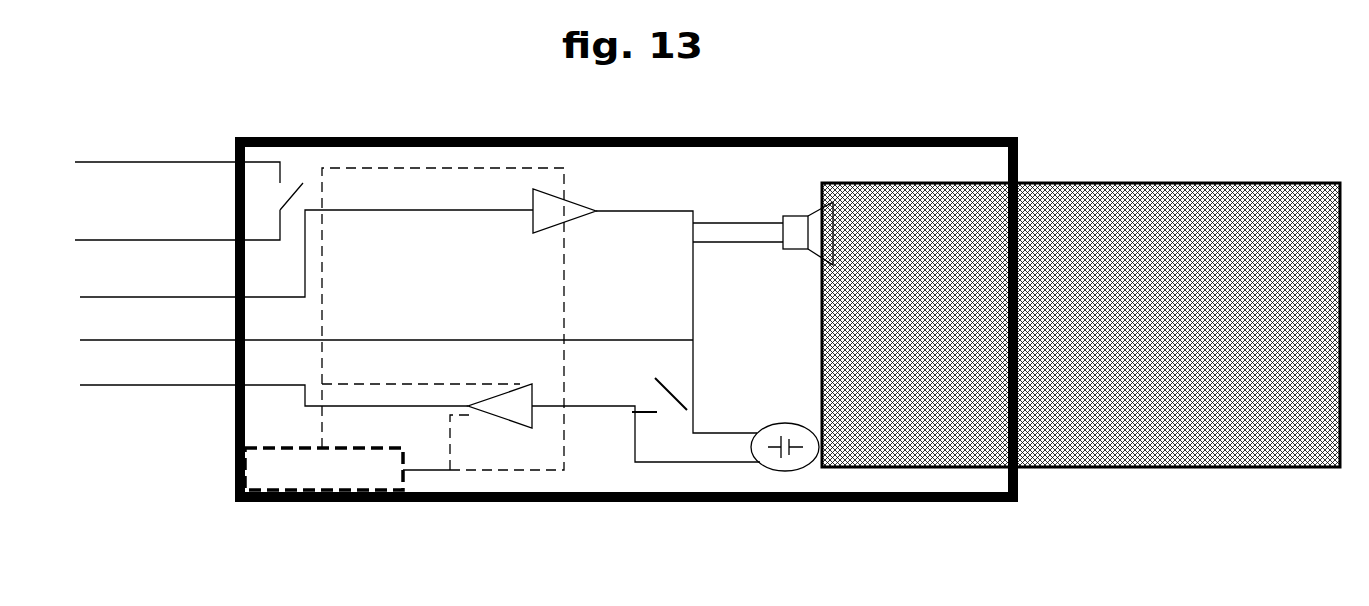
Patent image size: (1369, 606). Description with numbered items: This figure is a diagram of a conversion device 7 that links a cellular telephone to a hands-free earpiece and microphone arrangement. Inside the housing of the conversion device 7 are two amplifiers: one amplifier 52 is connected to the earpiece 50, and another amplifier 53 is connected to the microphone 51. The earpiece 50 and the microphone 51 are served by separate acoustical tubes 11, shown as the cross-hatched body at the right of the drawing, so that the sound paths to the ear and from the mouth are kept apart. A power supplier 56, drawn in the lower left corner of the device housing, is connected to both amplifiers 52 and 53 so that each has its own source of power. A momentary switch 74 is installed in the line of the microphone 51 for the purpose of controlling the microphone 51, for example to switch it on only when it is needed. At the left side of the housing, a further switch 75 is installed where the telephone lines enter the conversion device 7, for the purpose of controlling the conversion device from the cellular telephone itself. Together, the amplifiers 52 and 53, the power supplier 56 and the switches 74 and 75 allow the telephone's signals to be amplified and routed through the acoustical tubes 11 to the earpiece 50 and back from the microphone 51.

The conversion device 7 is at (595, 125).
The switch 75 is at (261, 152).
The amplifier 52 is at (523, 245).
The amplifier 53 is at (508, 370).
The earpiece 50 is at (787, 282).
The microphone 51 is at (787, 413).
The power supplier 56 is at (359, 486).
The momentary switch 74 is at (655, 425).
The acoustical tubes 11 is at (1261, 501).